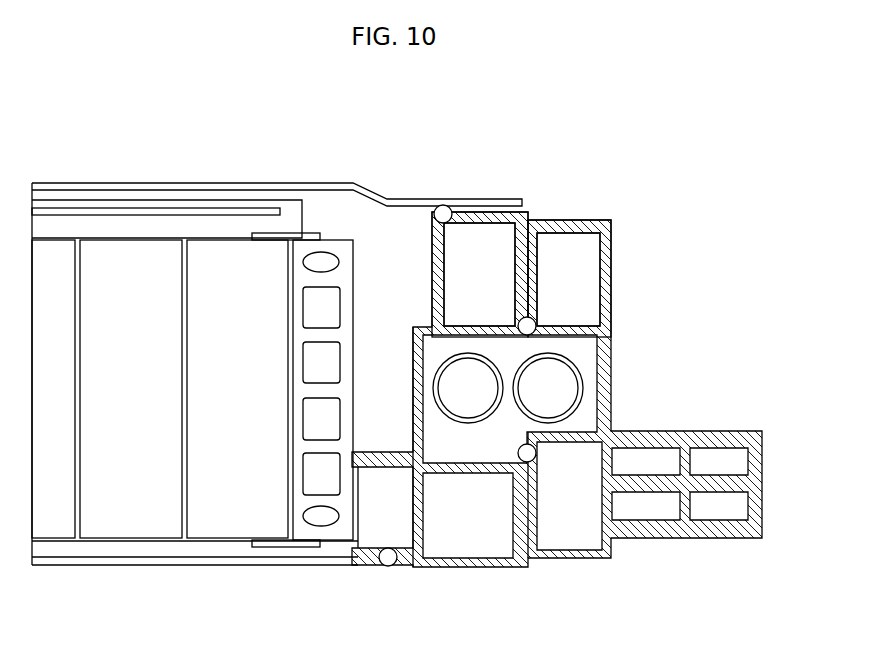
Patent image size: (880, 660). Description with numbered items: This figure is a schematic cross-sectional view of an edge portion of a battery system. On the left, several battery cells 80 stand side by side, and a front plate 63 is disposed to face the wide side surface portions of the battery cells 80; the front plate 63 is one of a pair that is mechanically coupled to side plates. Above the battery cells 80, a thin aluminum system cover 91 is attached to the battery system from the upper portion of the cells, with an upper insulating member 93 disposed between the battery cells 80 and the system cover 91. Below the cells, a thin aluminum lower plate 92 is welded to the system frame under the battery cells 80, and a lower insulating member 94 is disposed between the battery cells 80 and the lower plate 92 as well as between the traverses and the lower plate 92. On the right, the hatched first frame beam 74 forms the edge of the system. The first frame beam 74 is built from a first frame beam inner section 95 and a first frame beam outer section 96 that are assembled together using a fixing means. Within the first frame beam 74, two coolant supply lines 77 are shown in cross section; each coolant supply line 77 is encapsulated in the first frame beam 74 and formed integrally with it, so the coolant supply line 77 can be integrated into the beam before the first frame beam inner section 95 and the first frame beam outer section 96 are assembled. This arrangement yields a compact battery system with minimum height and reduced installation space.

The front plate 63 is at (332, 245).
The first frame beam 74 is at (521, 229).
The coolant supply line 77 is at (457, 400).
The battery cell 80 is at (63, 383).
The system cover 91 is at (97, 183).
The lower plate 92 is at (285, 565).
The upper insulating member 93 is at (170, 218).
The lower insulating member 94 is at (130, 548).
The first frame beam inner section 95 is at (482, 213).
The first frame beam outer section 96 is at (569, 246).